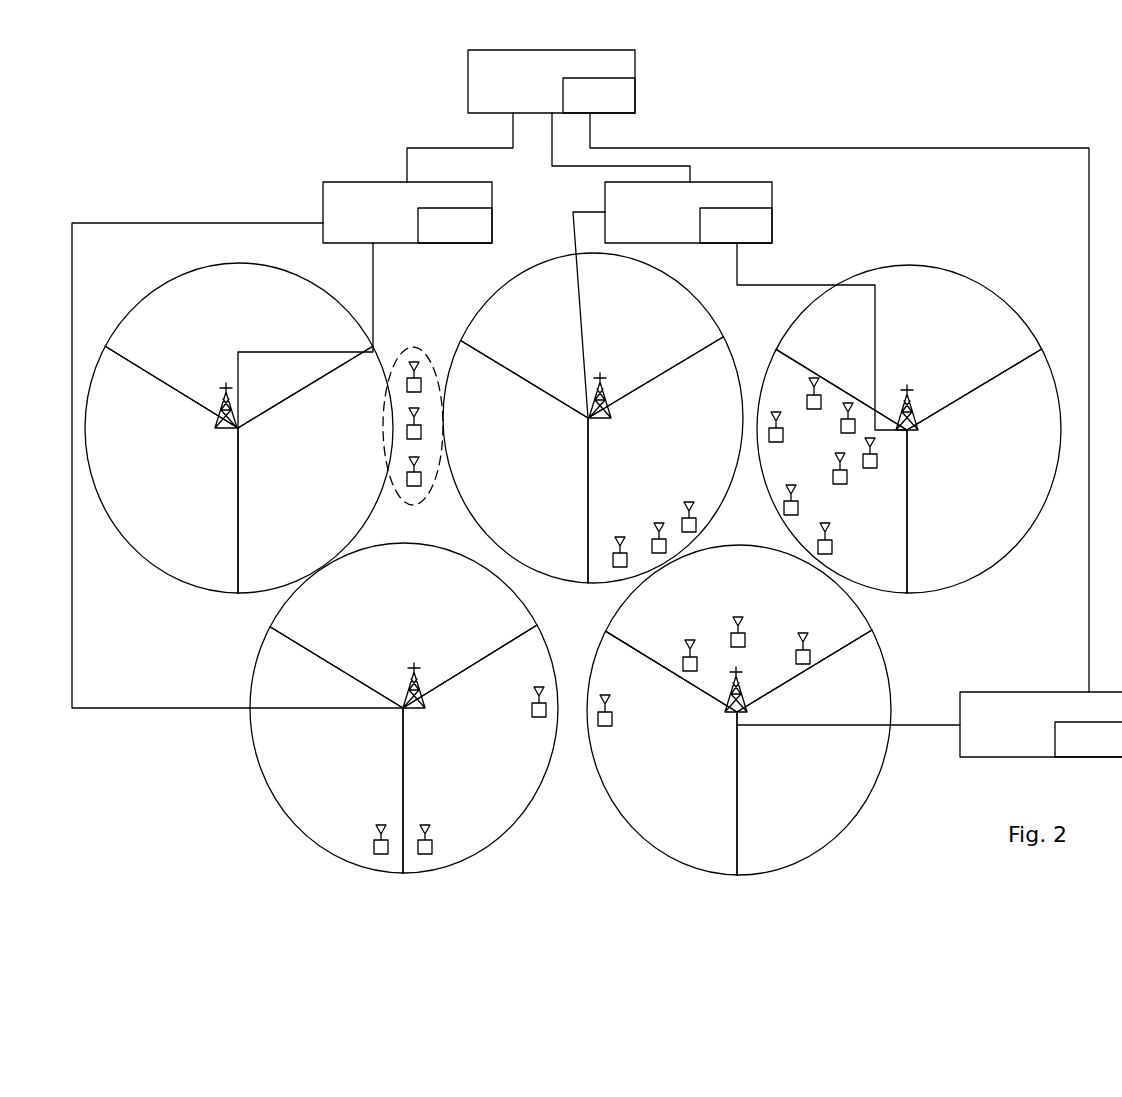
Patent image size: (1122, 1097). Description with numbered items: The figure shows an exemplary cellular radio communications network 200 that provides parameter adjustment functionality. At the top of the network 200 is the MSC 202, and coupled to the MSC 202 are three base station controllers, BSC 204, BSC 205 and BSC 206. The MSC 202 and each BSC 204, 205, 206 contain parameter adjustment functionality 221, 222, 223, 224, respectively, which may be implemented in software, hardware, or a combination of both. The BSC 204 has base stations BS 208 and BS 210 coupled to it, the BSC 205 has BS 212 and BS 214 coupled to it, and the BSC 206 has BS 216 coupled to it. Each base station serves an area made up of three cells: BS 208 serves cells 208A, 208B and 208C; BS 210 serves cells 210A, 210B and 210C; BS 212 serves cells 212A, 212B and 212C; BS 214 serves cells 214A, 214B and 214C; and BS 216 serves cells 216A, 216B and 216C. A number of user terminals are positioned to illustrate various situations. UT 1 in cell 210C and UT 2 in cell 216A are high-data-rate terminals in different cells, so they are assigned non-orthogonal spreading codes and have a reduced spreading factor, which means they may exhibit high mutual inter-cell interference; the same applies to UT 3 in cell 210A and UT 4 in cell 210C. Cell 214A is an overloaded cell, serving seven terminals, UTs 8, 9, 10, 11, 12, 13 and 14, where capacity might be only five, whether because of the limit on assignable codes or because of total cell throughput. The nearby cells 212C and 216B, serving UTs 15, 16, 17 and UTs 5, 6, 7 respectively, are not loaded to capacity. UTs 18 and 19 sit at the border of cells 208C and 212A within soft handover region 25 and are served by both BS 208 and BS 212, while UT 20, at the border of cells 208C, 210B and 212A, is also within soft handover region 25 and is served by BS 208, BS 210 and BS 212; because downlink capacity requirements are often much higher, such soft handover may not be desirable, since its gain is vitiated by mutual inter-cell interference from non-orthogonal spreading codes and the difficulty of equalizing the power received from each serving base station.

The network 200 is at (212, 100).
The MSC 202 is at (524, 108).
The parameter adjustment functionality 221 is at (617, 108).
The BSC 204 is at (377, 238).
The parameter adjustment functionality 222 is at (474, 238).
The BSC 205 is at (659, 238).
The parameter adjustment functionality 223 is at (755, 238).
The BSC 206 is at (1014, 751).
The parameter adjustment functionality 224 is at (1110, 751).
The BS 208 is at (238, 430).
The cell 208A is at (229, 568).
The cell 208B is at (182, 346).
The cell 208C is at (374, 405).
The BS 210 is at (413, 667).
The cell 210A is at (327, 755).
The cell 210B is at (432, 576).
The cell 210C is at (535, 786).
The BS 212 is at (588, 424).
The cell 212A is at (580, 555).
The cell 212B is at (532, 336).
The cell 212C is at (725, 396).
The BS 214 is at (980, 471).
The cell 214A is at (905, 578).
The cell 214B is at (949, 303).
The cell 214C is at (1045, 428).
The BS 216 is at (764, 580).
The cell 216A is at (727, 850).
The cell 216B is at (764, 580).
The cell 216C is at (819, 846).
The UT 1 is at (535, 696).
The UT 2 is at (612, 710).
The UT 3 is at (432, 832).
The UT 4 is at (375, 830).
The UT 5 is at (800, 650).
The UT 6 is at (735, 630).
The UT 7 is at (688, 655).
The UT 8 is at (847, 483).
The UT 9 is at (901, 465).
The UT 10 is at (810, 471).
The UT 11 is at (841, 425).
The UT 12 is at (812, 393).
The UT 13 is at (836, 513).
The UT 14 is at (878, 540).
The UT 15 is at (730, 491).
The UT 16 is at (659, 521).
The UT 17 is at (620, 535).
The UT 18 is at (414, 360).
The UT 19 is at (421, 420).
The UT 20 is at (407, 471).
The soft handover region 25 is at (436, 497).